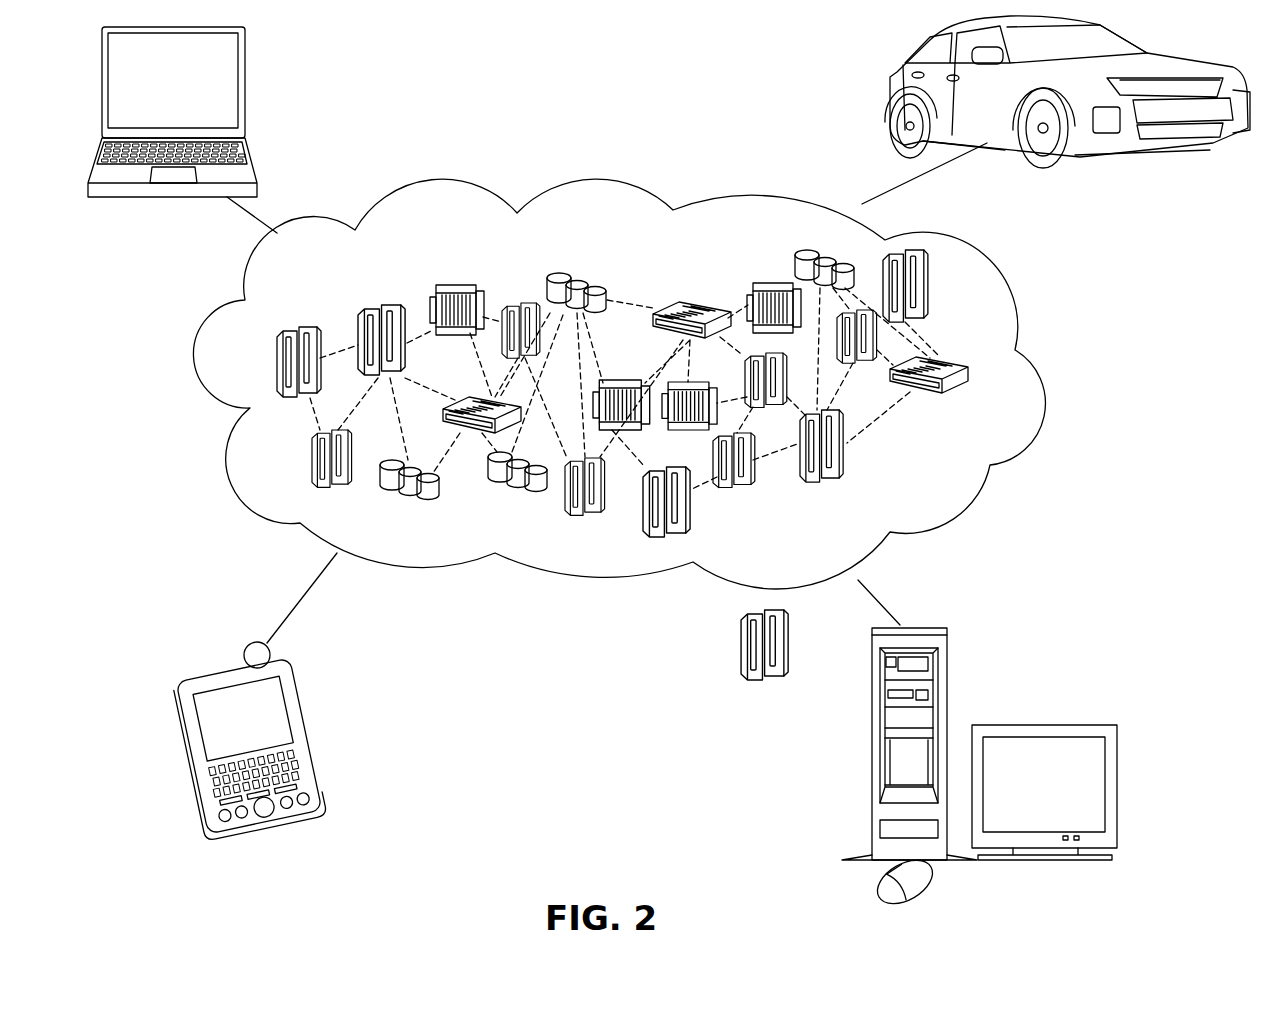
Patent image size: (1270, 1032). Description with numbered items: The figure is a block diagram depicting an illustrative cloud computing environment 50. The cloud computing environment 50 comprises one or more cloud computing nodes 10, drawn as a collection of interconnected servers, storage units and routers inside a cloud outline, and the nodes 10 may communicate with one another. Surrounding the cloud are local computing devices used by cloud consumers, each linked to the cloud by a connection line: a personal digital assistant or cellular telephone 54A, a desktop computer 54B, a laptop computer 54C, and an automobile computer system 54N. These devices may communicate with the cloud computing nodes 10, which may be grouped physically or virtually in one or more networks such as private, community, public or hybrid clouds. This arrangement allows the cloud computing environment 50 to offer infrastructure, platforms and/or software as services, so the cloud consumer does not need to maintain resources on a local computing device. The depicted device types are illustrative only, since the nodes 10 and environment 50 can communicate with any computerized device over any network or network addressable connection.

The cloud computing node 10 is at (952, 480).
The cloud computing environment 50 is at (1047, 376).
The personal digital assistant (PDA) or cellular telephone 54A is at (298, 703).
The desktop computer 54B is at (872, 688).
The laptop computer 54C is at (245, 68).
The automobile computer system 54N is at (887, 82).